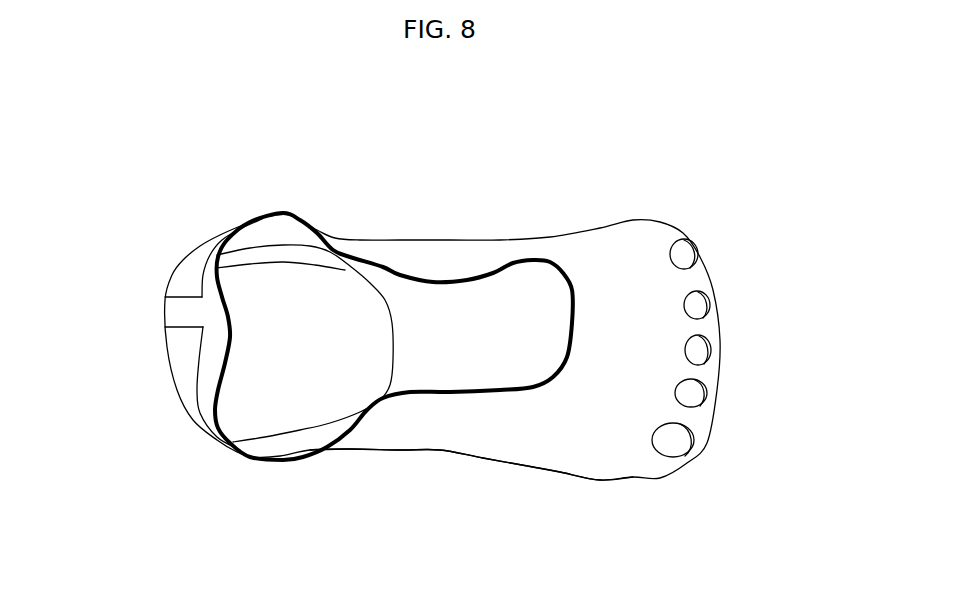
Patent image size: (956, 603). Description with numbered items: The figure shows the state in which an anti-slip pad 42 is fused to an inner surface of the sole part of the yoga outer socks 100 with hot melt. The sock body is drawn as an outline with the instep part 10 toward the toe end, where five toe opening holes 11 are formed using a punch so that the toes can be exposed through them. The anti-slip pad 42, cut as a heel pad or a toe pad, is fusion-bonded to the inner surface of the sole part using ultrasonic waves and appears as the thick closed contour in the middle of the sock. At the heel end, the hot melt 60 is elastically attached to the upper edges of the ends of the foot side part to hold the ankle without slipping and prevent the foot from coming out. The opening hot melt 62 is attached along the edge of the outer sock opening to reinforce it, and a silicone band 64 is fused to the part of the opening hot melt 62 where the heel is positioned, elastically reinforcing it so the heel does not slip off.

The yoga outer socks 100 is at (442, 226).
The instep part 10 is at (637, 262).
The toe opening holes 11 is at (700, 249).
The anti-slip pad 42 is at (300, 280).
The hot melt 60 is at (173, 312).
The opening hot melt 62 is at (447, 413).
The silicone band 64 is at (303, 440).